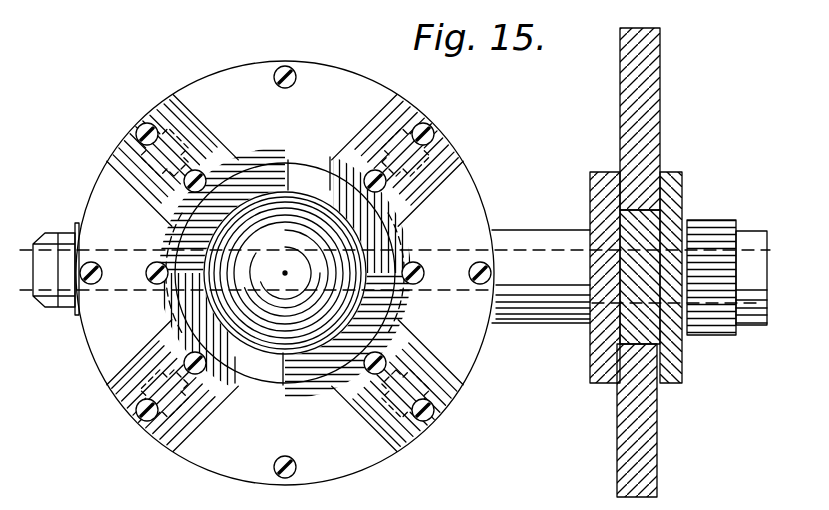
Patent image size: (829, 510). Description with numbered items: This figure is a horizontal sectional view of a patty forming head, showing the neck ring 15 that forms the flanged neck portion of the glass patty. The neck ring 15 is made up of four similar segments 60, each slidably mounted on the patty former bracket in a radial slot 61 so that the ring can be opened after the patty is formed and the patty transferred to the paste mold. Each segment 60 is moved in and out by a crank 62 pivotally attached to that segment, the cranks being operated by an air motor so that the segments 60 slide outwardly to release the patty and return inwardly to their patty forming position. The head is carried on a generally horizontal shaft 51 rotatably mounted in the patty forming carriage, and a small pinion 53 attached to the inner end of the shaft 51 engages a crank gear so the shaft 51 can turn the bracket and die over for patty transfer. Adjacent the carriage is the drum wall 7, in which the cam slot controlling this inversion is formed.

The drum wall 7 is at (645, 95).
The neck ring 15 is at (471, 166).
The shaft 51 is at (453, 262).
The pinion 53 is at (697, 220).
The segments 60 is at (310, 180).
The radial slots 61 is at (381, 152).
The crank 62 is at (448, 136).